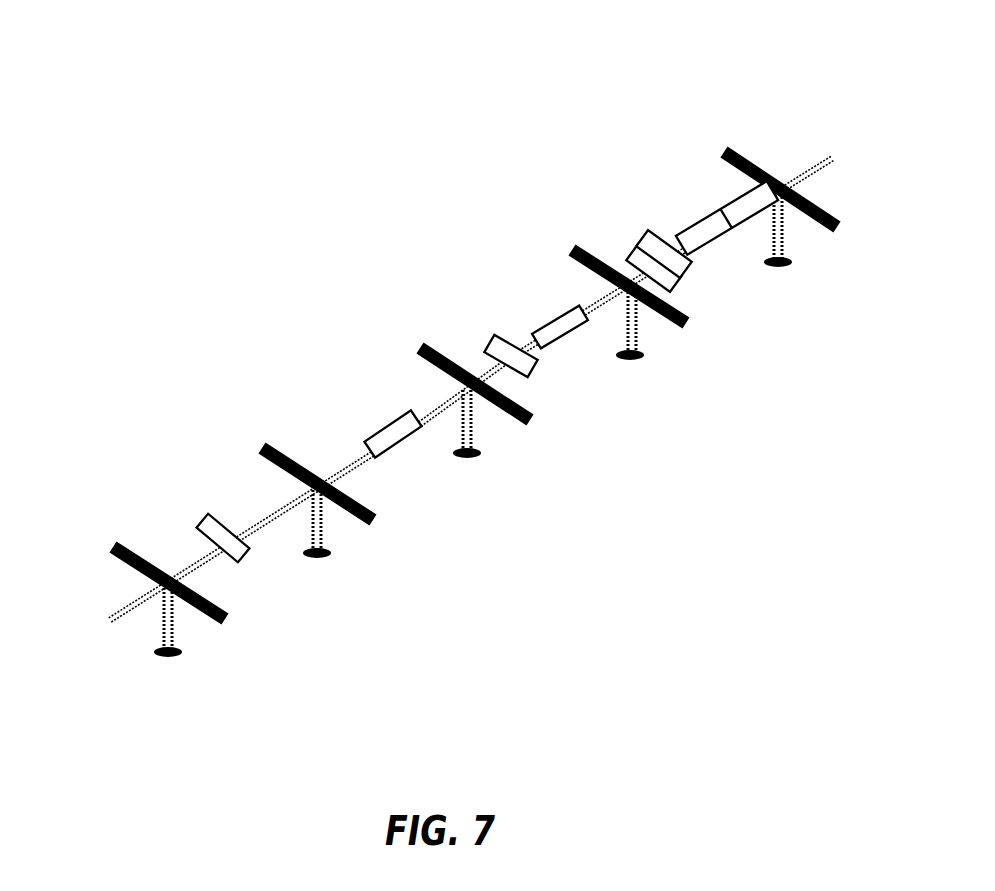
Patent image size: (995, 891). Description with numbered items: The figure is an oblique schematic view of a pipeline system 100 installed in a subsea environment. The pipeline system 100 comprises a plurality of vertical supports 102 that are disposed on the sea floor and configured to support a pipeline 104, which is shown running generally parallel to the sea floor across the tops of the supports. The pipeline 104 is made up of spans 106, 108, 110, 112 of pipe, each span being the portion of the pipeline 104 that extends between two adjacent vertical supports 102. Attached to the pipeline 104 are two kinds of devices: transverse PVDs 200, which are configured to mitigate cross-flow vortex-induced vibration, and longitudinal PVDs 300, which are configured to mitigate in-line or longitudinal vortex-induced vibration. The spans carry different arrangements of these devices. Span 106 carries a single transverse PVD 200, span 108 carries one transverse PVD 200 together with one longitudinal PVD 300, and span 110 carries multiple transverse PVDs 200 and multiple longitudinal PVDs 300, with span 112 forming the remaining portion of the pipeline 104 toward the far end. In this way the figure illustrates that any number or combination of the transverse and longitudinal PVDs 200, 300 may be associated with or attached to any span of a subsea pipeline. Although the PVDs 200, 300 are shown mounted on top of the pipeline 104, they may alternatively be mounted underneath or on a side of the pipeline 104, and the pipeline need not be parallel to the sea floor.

The pipeline system 100 is at (282, 120).
The vertical supports 102 is at (226, 608).
The pipeline 104 is at (132, 601).
The span 106 is at (257, 522).
The span 108 is at (350, 467).
The span 110 is at (528, 353).
The span 112 is at (672, 245).
The transverse PVD 200 is at (642, 240).
The longitudinal PVD 300 is at (737, 197).